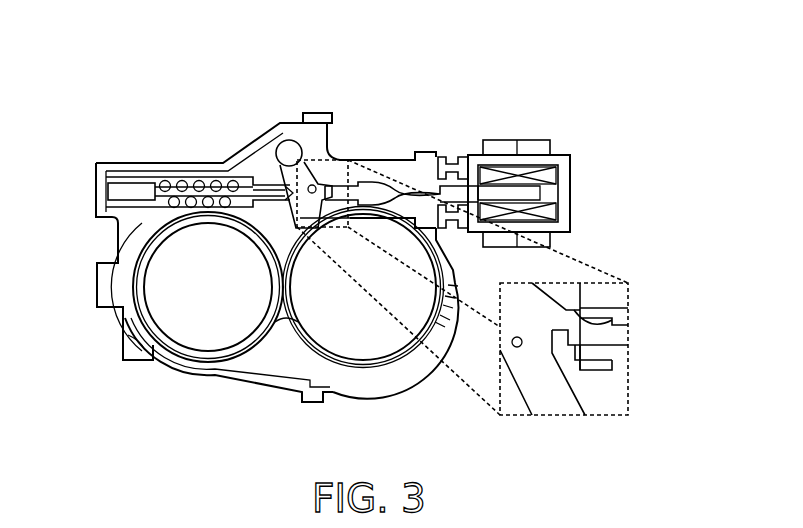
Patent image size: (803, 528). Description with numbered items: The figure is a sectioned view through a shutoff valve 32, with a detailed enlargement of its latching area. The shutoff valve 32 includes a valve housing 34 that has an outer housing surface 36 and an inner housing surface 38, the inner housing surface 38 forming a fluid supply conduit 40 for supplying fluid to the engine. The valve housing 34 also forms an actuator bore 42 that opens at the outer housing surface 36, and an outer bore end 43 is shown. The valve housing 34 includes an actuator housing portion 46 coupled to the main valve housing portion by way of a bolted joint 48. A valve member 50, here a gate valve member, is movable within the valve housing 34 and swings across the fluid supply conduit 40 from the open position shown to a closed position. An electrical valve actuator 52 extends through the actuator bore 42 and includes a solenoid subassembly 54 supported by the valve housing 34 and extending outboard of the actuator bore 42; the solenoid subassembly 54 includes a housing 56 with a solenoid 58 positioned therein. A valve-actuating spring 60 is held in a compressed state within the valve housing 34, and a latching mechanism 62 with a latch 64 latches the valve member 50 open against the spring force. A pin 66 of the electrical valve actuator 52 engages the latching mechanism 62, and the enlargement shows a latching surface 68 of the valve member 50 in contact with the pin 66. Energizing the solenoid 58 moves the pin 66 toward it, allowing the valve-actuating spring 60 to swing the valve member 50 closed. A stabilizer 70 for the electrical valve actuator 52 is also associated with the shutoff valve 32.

The shutoff valve 32 is at (620, 141).
The valve housing 34 is at (140, 361).
The outer housing surface 36 is at (178, 382).
The inner housing surface 38 is at (150, 290).
The fluid supply conduit 40 is at (221, 298).
The actuator bore 42 is at (385, 182).
The outer bore end 43 is at (455, 182).
The actuator housing portion 46 is at (378, 375).
The bolted joint 48 is at (340, 111).
The valve member 50 is at (393, 333).
The electrical valve actuator 52 is at (567, 147).
The solenoid subassembly 54 is at (570, 222).
The housing 56 is at (557, 200).
The solenoid 58 is at (540, 196).
The valve-actuating spring 60 is at (205, 178).
The latching mechanism 62 is at (340, 167).
The latch 64 is at (572, 298).
The pin 66 is at (618, 343).
The latching surface 68 is at (590, 330).
The stabilizer 70 is at (526, 133).